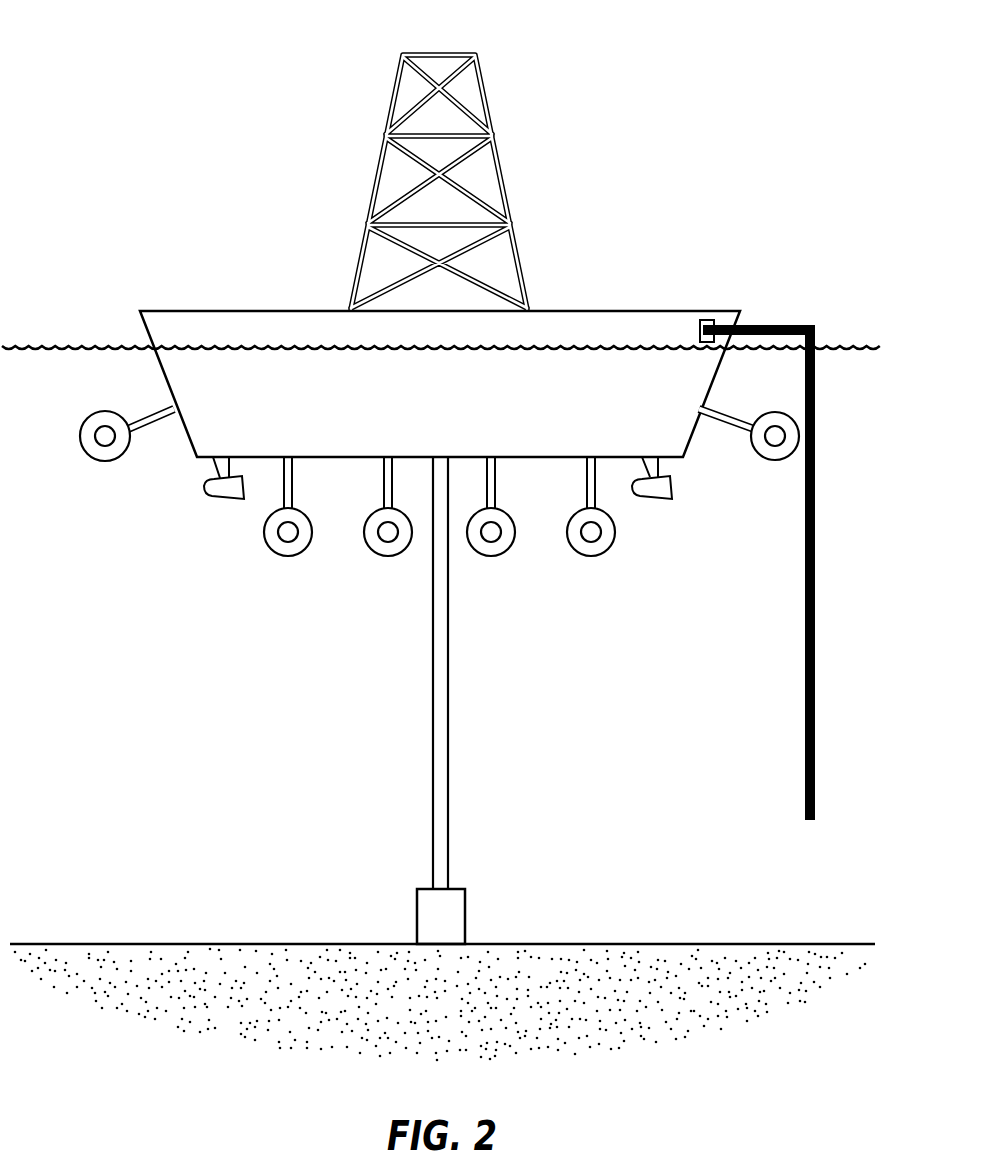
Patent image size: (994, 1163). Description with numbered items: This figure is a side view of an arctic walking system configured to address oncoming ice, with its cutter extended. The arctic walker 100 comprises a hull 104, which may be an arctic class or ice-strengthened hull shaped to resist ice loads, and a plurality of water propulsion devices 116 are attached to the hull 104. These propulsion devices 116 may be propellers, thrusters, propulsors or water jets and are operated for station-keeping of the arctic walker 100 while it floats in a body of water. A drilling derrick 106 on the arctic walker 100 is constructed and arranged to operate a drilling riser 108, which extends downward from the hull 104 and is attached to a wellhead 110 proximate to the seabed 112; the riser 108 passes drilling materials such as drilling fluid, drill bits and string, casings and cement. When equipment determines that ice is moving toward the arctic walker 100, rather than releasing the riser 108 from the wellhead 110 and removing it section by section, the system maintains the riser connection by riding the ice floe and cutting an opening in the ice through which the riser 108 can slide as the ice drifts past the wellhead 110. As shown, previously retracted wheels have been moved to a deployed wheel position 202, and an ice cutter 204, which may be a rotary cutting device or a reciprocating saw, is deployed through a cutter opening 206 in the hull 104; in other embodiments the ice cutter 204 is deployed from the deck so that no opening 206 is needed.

The arctic walker 100 is at (246, 37).
The hull 104 is at (599, 311).
The drilling derrick 106 is at (490, 103).
The drilling riser 108 is at (448, 655).
The wellhead 110 is at (465, 919).
The seabed 112 is at (187, 943).
The water propulsion device 116 is at (655, 499).
The deployed wheel position 202 is at (298, 553).
The ice cutter 204 is at (805, 640).
The cutter opening 206 is at (704, 318).